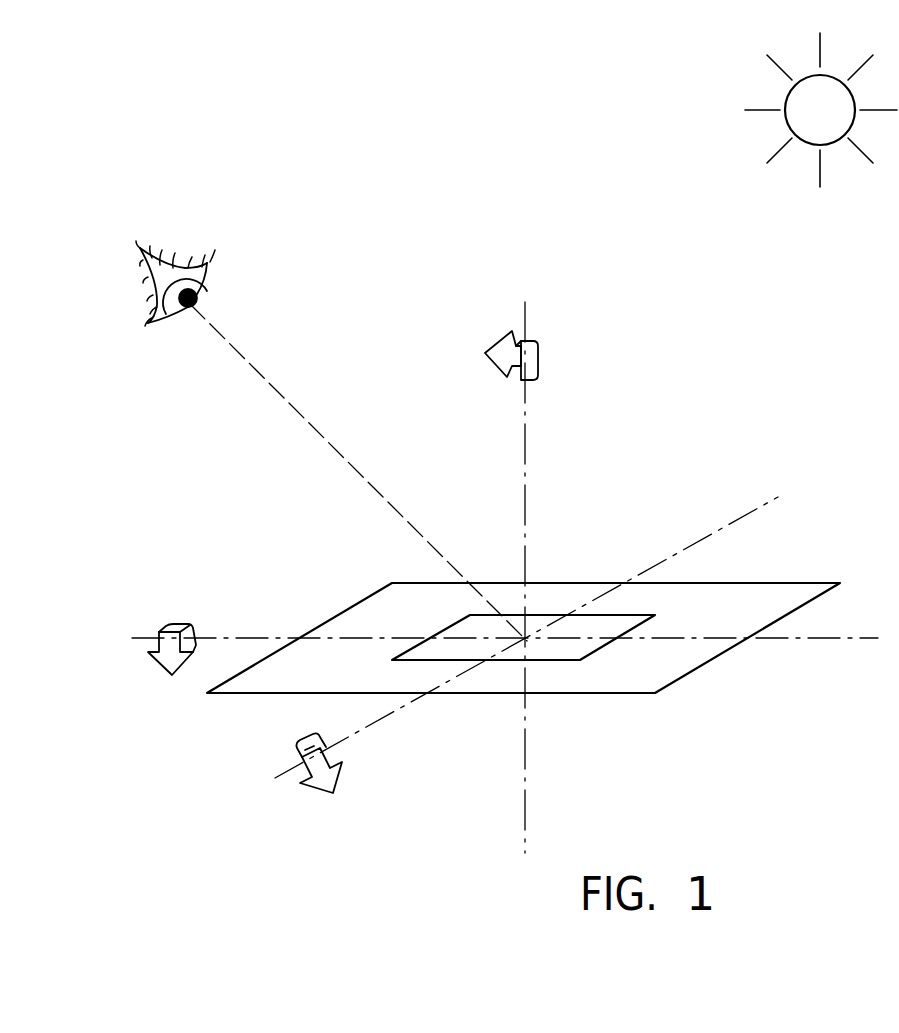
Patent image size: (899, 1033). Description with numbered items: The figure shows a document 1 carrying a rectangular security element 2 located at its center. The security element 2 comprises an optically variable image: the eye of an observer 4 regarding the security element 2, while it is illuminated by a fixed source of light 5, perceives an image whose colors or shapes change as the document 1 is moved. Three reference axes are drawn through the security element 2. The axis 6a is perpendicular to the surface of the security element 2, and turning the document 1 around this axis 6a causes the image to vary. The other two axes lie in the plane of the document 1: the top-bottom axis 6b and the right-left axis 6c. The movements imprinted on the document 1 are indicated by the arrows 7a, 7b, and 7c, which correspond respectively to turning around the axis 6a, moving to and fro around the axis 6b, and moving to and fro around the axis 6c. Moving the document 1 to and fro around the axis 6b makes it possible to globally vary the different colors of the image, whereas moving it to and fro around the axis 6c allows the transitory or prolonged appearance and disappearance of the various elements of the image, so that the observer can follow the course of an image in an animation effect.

The document 1 is at (753, 578).
The security element 2 is at (538, 620).
The eye of observer 4 is at (213, 302).
The fixed source of light 5 is at (782, 127).
The axis perpendicular to the surface of the security element 6a is at (527, 450).
The top-bottom reference axis 6b is at (805, 641).
The right-left reference axis 6c is at (748, 513).
The arrow 7a is at (495, 363).
The arrow 7b is at (166, 665).
The arrow 7c is at (330, 779).